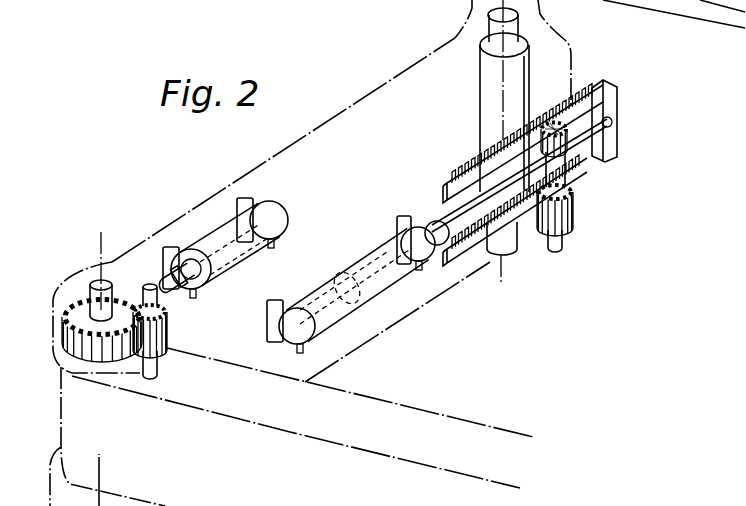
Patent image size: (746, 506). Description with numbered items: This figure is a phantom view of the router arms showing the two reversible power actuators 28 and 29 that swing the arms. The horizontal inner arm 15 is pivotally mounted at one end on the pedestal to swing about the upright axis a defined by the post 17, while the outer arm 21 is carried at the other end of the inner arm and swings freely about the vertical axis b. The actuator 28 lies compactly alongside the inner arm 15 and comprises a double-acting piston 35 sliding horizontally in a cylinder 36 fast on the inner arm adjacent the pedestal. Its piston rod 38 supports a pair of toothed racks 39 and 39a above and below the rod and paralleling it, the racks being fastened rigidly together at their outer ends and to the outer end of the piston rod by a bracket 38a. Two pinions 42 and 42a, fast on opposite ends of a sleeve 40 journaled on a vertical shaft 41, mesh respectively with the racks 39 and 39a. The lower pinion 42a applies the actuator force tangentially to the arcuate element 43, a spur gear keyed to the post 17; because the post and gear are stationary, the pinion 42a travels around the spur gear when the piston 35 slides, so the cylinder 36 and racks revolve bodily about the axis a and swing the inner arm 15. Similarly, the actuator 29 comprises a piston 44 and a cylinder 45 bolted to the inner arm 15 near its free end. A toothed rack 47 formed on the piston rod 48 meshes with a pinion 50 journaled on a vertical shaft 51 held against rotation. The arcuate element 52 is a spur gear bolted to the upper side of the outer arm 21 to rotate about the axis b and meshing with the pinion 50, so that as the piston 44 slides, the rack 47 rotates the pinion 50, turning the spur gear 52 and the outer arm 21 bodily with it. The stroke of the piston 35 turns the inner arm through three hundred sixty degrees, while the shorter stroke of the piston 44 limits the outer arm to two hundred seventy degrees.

The inner arm 15 is at (378, 90).
The post 17 is at (480, 88).
The outer arm 21 is at (446, 414).
The power actuator 28 is at (403, 291).
The power actuator 29 is at (209, 224).
The double-acting piston 35 is at (349, 280).
The cylinder 36 is at (329, 298).
The piston rod 38 is at (456, 218).
The bracket 38a is at (620, 143).
The toothed rack 39 is at (592, 108).
The toothed rack 39a is at (585, 166).
The sleeve 40 is at (560, 180).
The vertical shaft 41 is at (563, 243).
The pinion 42 is at (567, 115).
The pinion 42a is at (573, 205).
The arcuate element 43 is at (512, 233).
The piston 44 is at (276, 246).
The cylinder 45 is at (241, 262).
The toothed rack 47 is at (169, 296).
The piston rod 48 is at (208, 284).
The pinion 50 is at (165, 348).
The vertical shaft 51 is at (156, 373).
The arcuate element 52 is at (67, 313).
The upright axis a is at (482, 68).
The vertical axis b is at (103, 250).